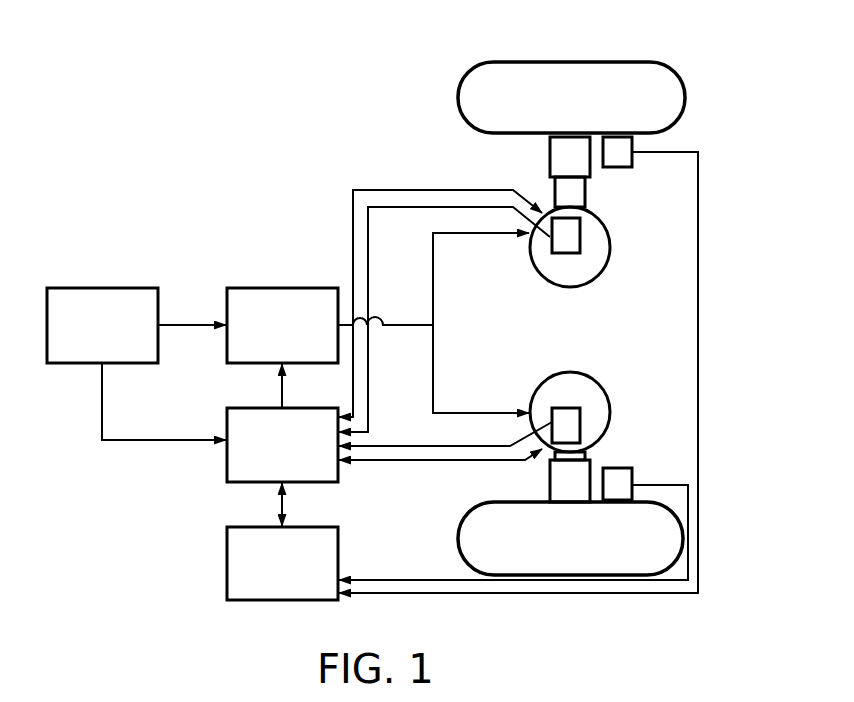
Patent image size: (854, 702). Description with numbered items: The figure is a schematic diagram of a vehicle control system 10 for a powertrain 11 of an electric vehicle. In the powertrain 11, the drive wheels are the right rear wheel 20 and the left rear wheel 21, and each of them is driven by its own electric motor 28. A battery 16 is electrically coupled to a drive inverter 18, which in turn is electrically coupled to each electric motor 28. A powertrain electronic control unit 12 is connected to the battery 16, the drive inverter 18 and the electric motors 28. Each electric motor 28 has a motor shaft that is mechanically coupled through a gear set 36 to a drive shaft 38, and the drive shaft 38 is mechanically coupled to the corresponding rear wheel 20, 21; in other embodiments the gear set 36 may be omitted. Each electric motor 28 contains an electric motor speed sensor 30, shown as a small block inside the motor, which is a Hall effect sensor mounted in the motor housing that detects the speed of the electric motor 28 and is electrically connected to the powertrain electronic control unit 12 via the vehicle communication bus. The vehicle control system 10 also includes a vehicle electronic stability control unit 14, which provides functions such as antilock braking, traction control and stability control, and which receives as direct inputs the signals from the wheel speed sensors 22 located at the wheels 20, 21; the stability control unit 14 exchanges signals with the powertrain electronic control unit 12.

The vehicle control system 10 is at (184, 96).
The powertrain 11 is at (372, 315).
The powertrain electronic control unit 12 is at (268, 458).
The vehicle electronic stability control unit 14 is at (268, 576).
The battery 16 is at (88, 338).
The drive inverter 18 is at (268, 338).
The right rear wheel 20 is at (543, 62).
The left rear wheel 21 is at (458, 541).
The wheel speed sensor 22 is at (618, 167).
The electric motor 28 is at (605, 275).
The electric motor speed sensor 30 is at (580, 230).
The gear set 36 is at (550, 157).
The drive shaft 38 is at (575, 135).